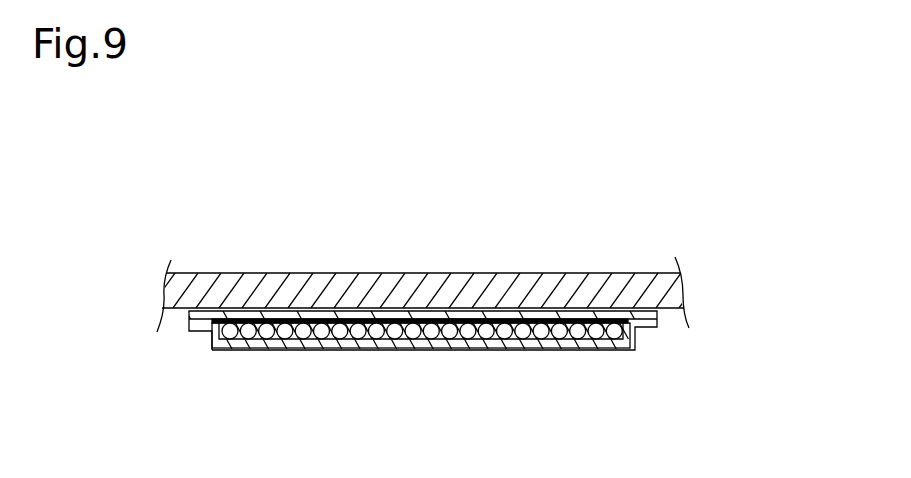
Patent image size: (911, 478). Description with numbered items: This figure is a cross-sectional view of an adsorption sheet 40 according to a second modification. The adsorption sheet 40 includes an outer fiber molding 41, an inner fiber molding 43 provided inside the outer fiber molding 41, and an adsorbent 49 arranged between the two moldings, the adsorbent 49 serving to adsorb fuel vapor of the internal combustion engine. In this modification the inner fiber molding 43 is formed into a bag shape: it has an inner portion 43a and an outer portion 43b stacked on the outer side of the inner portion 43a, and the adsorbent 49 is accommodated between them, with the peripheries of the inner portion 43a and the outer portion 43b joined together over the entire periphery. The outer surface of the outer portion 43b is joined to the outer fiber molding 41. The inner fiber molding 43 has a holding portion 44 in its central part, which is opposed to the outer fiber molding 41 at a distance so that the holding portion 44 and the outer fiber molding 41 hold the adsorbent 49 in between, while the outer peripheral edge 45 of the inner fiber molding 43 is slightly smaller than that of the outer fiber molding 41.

The adsorption sheet 40 is at (615, 249).
The outer fiber molding 41 is at (422, 273).
The inner fiber molding 43 is at (603, 412).
The inner portion 43a is at (480, 354).
The outer portion 43b is at (556, 334).
The holding portion 44 is at (420, 352).
The outer peripheral edge 45 is at (195, 333).
The adsorbent 49 is at (249, 338).